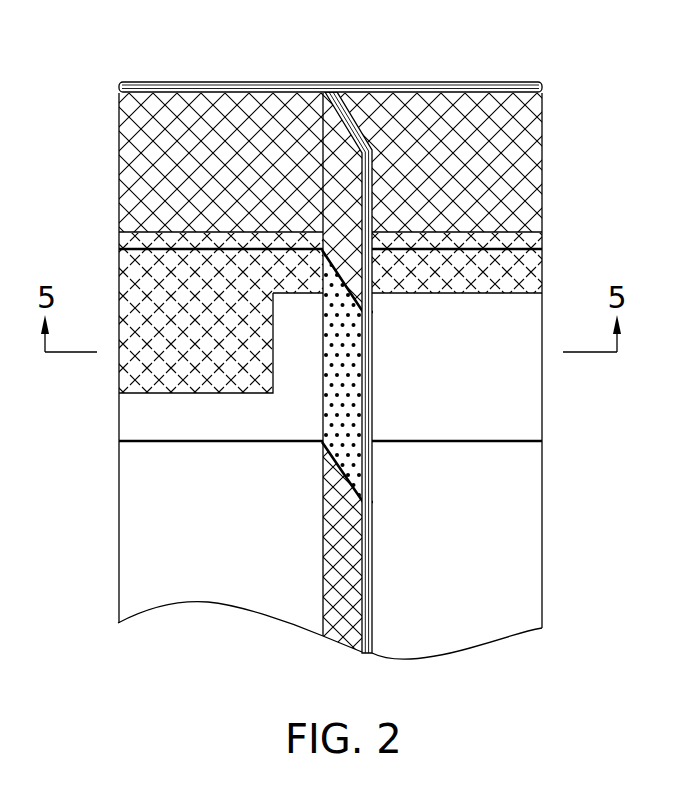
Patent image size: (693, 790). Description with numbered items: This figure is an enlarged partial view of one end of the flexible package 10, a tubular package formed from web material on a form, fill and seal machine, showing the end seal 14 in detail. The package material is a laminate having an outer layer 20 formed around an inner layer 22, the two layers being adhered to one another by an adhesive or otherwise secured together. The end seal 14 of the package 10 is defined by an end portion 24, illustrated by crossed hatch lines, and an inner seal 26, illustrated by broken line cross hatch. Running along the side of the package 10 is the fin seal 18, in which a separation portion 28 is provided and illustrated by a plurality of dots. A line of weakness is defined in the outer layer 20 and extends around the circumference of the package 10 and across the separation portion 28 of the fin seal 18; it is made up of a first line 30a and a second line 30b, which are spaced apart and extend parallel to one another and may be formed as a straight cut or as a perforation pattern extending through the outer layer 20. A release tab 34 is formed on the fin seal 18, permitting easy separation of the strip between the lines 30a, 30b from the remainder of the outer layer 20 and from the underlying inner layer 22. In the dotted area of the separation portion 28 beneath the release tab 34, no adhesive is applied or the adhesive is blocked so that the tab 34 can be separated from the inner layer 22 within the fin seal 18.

The flexible package 10 is at (590, 103).
The end seal 14 is at (155, 143).
The side fin seal 18 is at (382, 567).
The outer layer 20 is at (444, 346).
The inner layer 22 is at (329, 83).
The end portion 24 is at (490, 150).
The inner seal 26 is at (515, 272).
The separation portion 28 is at (346, 382).
The first line 30a is at (182, 249).
The second line 30b is at (152, 445).
The release tab 34 is at (355, 486).